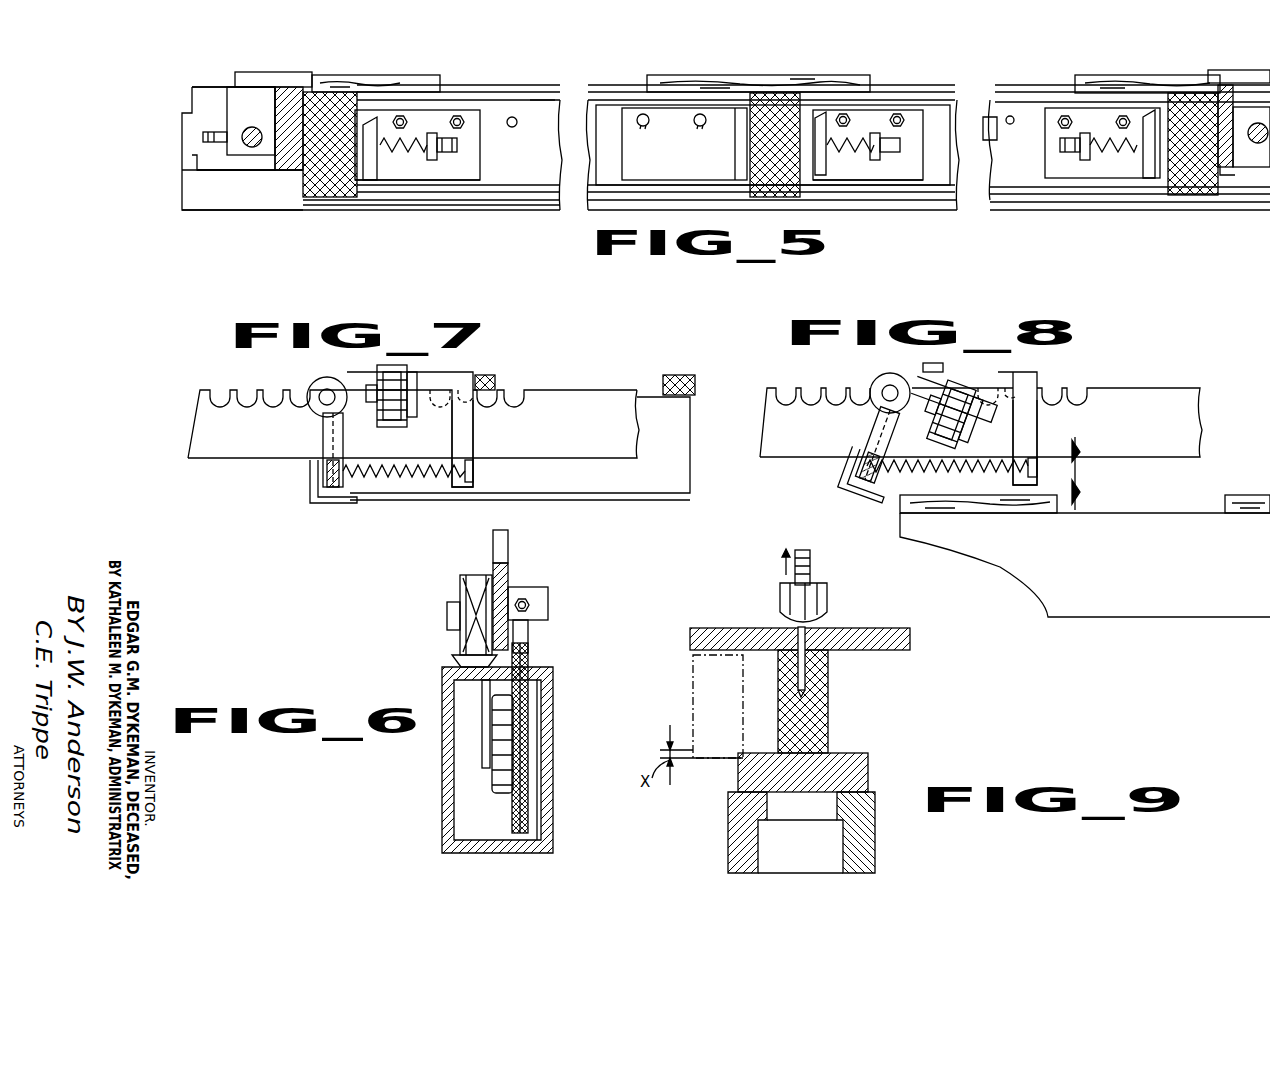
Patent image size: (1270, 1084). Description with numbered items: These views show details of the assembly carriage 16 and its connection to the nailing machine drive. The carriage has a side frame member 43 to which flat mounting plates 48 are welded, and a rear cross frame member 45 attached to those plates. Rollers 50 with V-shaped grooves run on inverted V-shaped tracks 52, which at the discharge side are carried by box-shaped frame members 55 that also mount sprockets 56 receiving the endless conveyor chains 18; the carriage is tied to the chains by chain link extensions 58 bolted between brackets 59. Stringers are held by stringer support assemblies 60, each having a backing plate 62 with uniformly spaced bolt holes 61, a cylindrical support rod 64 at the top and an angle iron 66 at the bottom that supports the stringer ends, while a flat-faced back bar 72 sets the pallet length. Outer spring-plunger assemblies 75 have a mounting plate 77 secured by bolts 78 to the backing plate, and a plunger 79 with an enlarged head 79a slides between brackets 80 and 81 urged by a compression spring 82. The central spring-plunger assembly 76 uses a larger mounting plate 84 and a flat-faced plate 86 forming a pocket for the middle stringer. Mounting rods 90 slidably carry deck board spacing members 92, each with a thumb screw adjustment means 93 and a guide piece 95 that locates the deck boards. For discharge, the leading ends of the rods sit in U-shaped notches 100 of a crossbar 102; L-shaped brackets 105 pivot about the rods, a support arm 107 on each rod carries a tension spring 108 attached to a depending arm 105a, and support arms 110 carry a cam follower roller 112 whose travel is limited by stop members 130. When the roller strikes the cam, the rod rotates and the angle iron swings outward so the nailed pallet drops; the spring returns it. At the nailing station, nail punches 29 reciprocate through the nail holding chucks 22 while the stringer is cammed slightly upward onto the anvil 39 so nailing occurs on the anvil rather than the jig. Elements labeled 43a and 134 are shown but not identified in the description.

In FIG. 5, the assembly carriage 16 is at (180, 125).
In FIG. 6, the endless conveyor chains 18 is at (529, 690).
In FIG. 9, the nail holding chucks 22 is at (828, 598).
In FIG. 9, the nail punches 29 is at (811, 565).
In FIG. 9, the anvil 39 is at (842, 760).
In FIG. 5, the side frame member 43 is at (186, 193).
In FIG. 6, the side frame member 43 is at (508, 585).
In FIG. 5, the pad body end 43a is at (985, 128).
In FIG. 5, the rear cross frame member 45 is at (290, 160).
In FIG. 5, the flat mounting plates 48 is at (192, 97).
In FIG. 6, the rollers 50 is at (458, 645).
In FIG. 6, the inverted V-shaped tracks 52 is at (455, 662).
In FIG. 6, the box-shaped frame members 55 is at (442, 755).
In FIG. 6, the sprockets 56 is at (514, 735).
In FIG. 6, the chain link extensions 58 is at (529, 632).
In FIG. 6, the brackets 59 is at (549, 600).
In FIG. 5, the stringer support assemblies 60 is at (1033, 82).
In FIG. 5, the bolt holes 61 is at (512, 116).
In FIG. 5, the backing plates 62 is at (542, 100).
In FIG. 7, the backing plates 62 is at (323, 443).
In FIG. 8, the backing plates 62 is at (872, 418).
In FIG. 5, the cylindrical support rod 64 is at (471, 85).
In FIG. 7, the cylindrical support rod 64 is at (321, 400).
In FIG. 8, the cylindrical support rod 64 is at (884, 392).
In FIG. 5, the angle iron 66 is at (540, 202).
In FIG. 7, the angle iron 66 is at (309, 492).
In FIG. 8, the angle iron 66 is at (840, 477).
In FIG. 5, the back bar 72 is at (1236, 175).
In FIG. 5, the spring-plunger assemblies 75 is at (462, 160).
In FIG. 5, the spring-plunger assembly 76 is at (852, 172).
In FIG. 5, the mounting plate 77 is at (481, 173).
In FIG. 5, the bolts 78 is at (457, 114).
In FIG. 5, the plunger 79 is at (458, 145).
In FIG. 5, the enlarged head 79a is at (818, 120).
In FIG. 5, the bracket 80 is at (368, 182).
In FIG. 5, the bracket 81 is at (432, 162).
In FIG. 5, the compression spring 82 is at (405, 157).
In FIG. 5, the mounting plate 84 is at (658, 162).
In FIG. 5, the flat-faced plate 86 is at (740, 140).
In FIG. 5, the mounting rods 90 is at (250, 147).
In FIG. 5, the deck board spacing members 92 is at (264, 118).
In FIG. 5, the thumb screw adjustment means 93 is at (203, 137).
In FIG. 5, the guide piece 95 is at (251, 72).
In FIG. 7, the U-shaped notches 100 is at (250, 390).
In FIG. 8, the U-shaped notches 100 is at (808, 388).
In FIG. 7, the crossbar 102 is at (198, 427).
In FIG. 8, the crossbar 102 is at (1170, 420).
In FIG. 7, the L-shaped brackets 105 is at (455, 375).
In FIG. 8, the L-shaped brackets 105 is at (1020, 372).
In FIG. 7, the depending arm 105a is at (474, 440).
In FIG. 8, the depending arm 105a is at (1030, 425).
In FIG. 7, the support arm 107 is at (344, 445).
In FIG. 8, the support arm 107 is at (864, 430).
In FIG. 7, the tension spring 108 is at (412, 480).
In FIG. 8, the tension spring 108 is at (980, 475).
In FIG. 7, the support arms 110 is at (342, 378).
In FIG. 8, the support arms 110 is at (905, 378).
In FIG. 7, the cam follower roller 112 is at (402, 425).
In FIG. 8, the cam follower roller 112 is at (968, 430).
In FIG. 7, the stop members 130 is at (395, 365).
In FIG. 8, the stop members 130 is at (943, 368).
In FIG. 6, the bar 134 is at (493, 545).